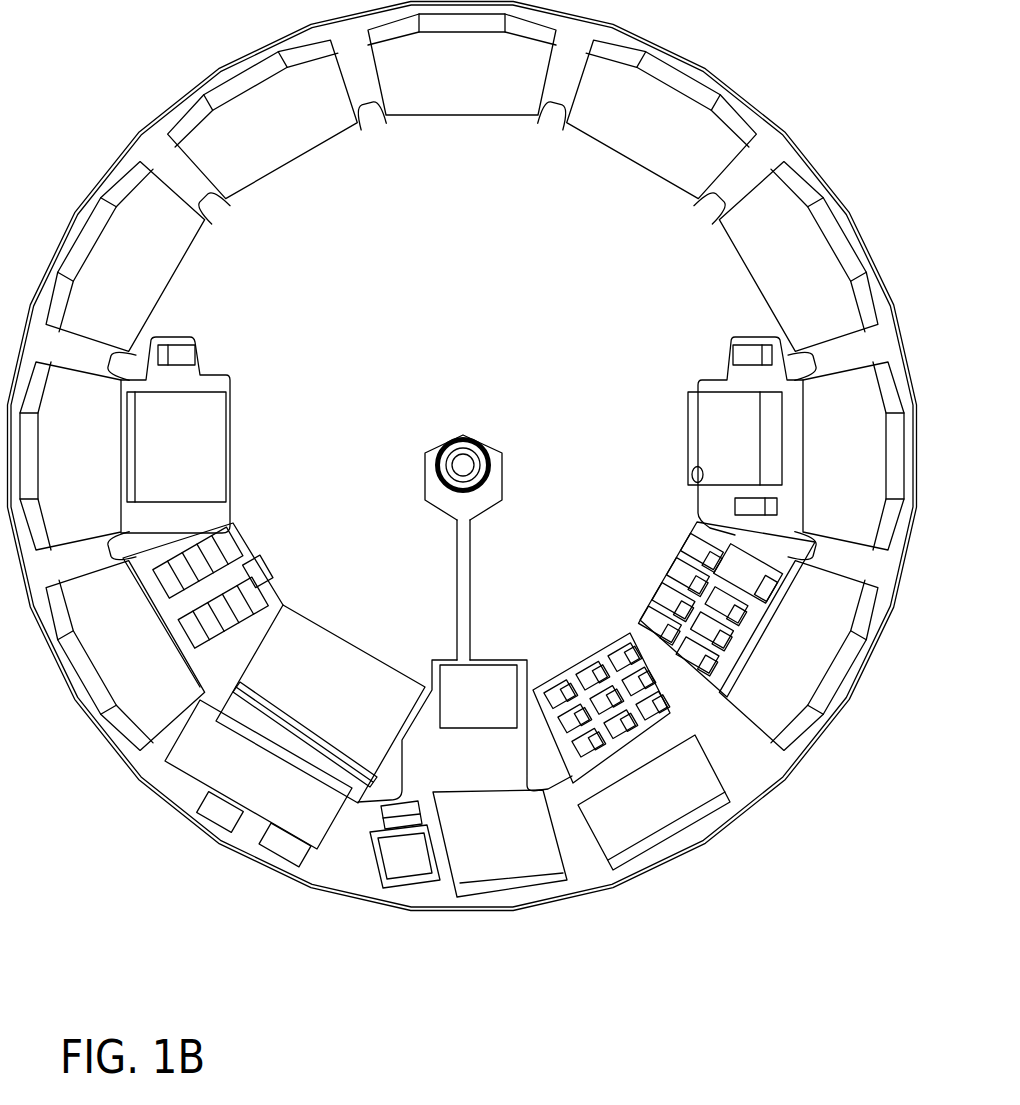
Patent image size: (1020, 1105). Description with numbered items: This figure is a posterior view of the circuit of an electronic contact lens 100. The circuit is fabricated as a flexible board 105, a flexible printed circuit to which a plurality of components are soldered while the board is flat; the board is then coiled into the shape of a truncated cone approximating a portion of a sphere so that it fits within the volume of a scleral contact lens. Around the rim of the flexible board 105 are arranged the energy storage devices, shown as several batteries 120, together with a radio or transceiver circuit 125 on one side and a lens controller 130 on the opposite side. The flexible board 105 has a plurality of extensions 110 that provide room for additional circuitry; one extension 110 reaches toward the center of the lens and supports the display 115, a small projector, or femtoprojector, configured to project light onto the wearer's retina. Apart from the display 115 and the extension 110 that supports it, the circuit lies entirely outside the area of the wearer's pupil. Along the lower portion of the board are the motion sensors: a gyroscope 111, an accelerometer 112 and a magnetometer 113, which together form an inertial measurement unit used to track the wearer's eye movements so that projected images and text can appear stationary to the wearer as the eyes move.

The electronic contact lens 100 is at (89, 106).
The flexible board 105 is at (700, 848).
The extension 110 is at (218, 373).
The gyroscope 111 is at (351, 698).
The accelerometer 112 is at (426, 868).
The magnetometer 113 is at (656, 834).
The display 115 is at (488, 452).
The battery 120 is at (288, 163).
The radio 125 is at (690, 420).
The lens controller 130 is at (222, 427).